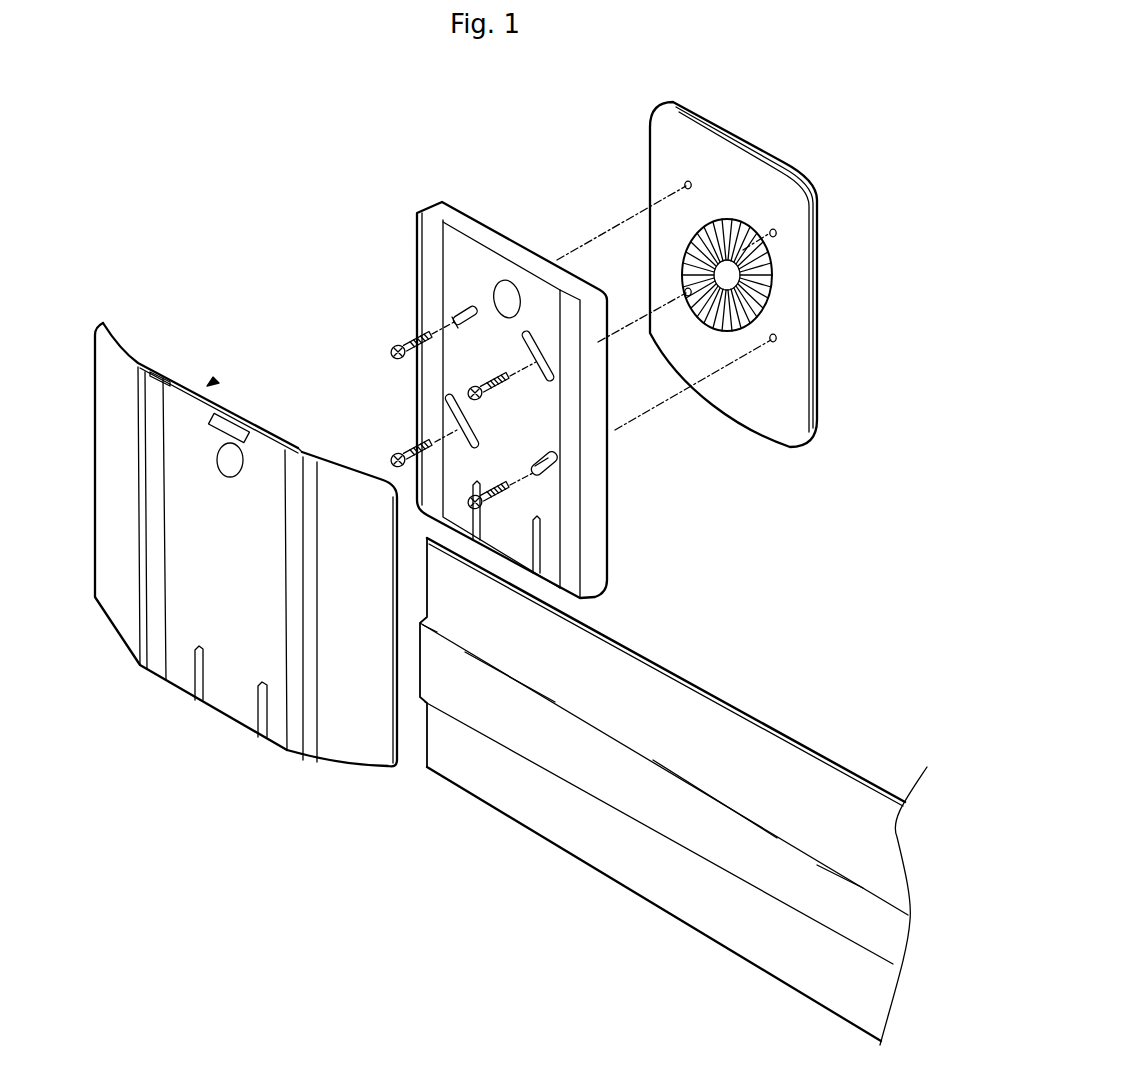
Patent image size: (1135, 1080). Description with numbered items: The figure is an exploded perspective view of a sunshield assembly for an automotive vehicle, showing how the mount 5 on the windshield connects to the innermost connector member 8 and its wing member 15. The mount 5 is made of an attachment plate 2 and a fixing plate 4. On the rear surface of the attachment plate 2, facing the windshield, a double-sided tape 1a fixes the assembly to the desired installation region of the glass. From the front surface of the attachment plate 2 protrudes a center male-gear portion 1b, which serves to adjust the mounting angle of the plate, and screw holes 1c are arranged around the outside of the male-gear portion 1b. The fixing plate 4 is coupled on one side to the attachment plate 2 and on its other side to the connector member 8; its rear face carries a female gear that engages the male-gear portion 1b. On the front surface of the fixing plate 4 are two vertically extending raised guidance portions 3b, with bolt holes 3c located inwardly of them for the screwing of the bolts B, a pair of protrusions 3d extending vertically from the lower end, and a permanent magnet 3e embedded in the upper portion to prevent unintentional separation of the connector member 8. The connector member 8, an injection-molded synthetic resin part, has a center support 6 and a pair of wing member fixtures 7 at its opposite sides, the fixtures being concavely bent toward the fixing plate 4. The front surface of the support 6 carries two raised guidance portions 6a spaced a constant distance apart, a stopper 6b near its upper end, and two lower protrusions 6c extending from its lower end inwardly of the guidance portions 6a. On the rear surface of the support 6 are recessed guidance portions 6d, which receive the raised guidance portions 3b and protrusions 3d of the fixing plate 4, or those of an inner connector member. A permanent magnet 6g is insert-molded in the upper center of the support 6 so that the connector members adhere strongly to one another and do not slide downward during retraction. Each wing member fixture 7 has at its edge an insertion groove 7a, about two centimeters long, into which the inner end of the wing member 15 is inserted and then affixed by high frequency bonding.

The double-sided tape 1a is at (818, 292).
The center male-gear portion 1b is at (771, 297).
The screw holes 1c is at (776, 229).
The attachment plate 2 is at (654, 140).
The raised guidance portions 3b is at (573, 506).
The bolt holes 3c is at (455, 305).
The protrusions 3d is at (540, 545).
The permanent magnet 3e is at (503, 284).
The fixing plate 4 is at (533, 249).
The mount 5 is at (605, 103).
The bolts B is at (393, 348).
The support 6 is at (198, 510).
The raised guidance portions 6a is at (152, 422).
The stopper 6b is at (233, 427).
The lower protrusions 6c is at (264, 723).
The recessed guidance portions 6d is at (161, 373).
The permanent magnet 6g is at (237, 463).
The wing member fixtures 7 is at (350, 723).
The insertion grooves 7a is at (403, 705).
The connector member 8 is at (214, 383).
The wing member 15 is at (612, 833).